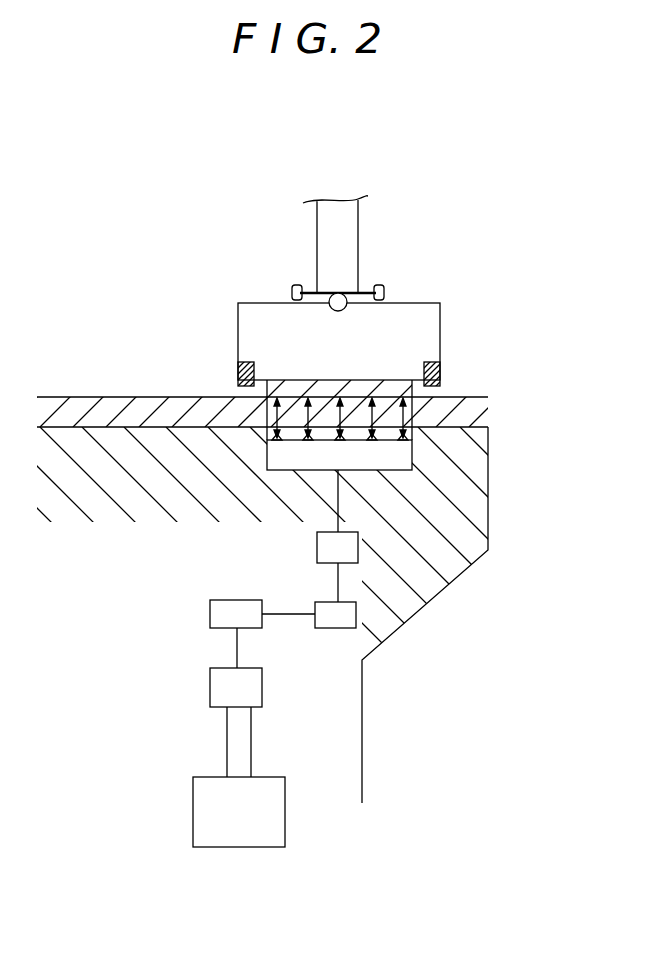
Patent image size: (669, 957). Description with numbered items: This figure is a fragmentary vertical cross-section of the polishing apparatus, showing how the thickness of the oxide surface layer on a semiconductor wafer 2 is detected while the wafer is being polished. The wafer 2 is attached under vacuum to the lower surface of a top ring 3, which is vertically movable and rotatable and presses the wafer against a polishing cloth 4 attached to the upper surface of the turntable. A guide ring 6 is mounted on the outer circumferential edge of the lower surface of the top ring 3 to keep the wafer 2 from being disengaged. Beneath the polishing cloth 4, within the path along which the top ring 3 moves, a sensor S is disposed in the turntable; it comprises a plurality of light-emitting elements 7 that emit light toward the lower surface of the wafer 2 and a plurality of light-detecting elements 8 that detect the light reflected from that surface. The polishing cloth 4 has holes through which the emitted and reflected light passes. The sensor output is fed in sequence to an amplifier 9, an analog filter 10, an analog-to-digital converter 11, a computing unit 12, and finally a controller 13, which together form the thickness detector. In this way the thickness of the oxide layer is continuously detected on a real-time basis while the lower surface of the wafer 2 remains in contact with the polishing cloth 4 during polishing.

The semiconductor wafer 2 is at (368, 378).
The top ring 3 is at (405, 312).
The polishing cloth 4 is at (489, 413).
The guide ring 6 is at (443, 373).
The light-emitting elements 7 is at (450, 456).
The light-detecting elements 8 is at (393, 460).
The amplifier 9 is at (317, 549).
The analog filter 10 is at (333, 628).
The analog-to-digital converter 11 is at (246, 612).
The computing unit 12 is at (233, 683).
The controller 13 is at (220, 800).